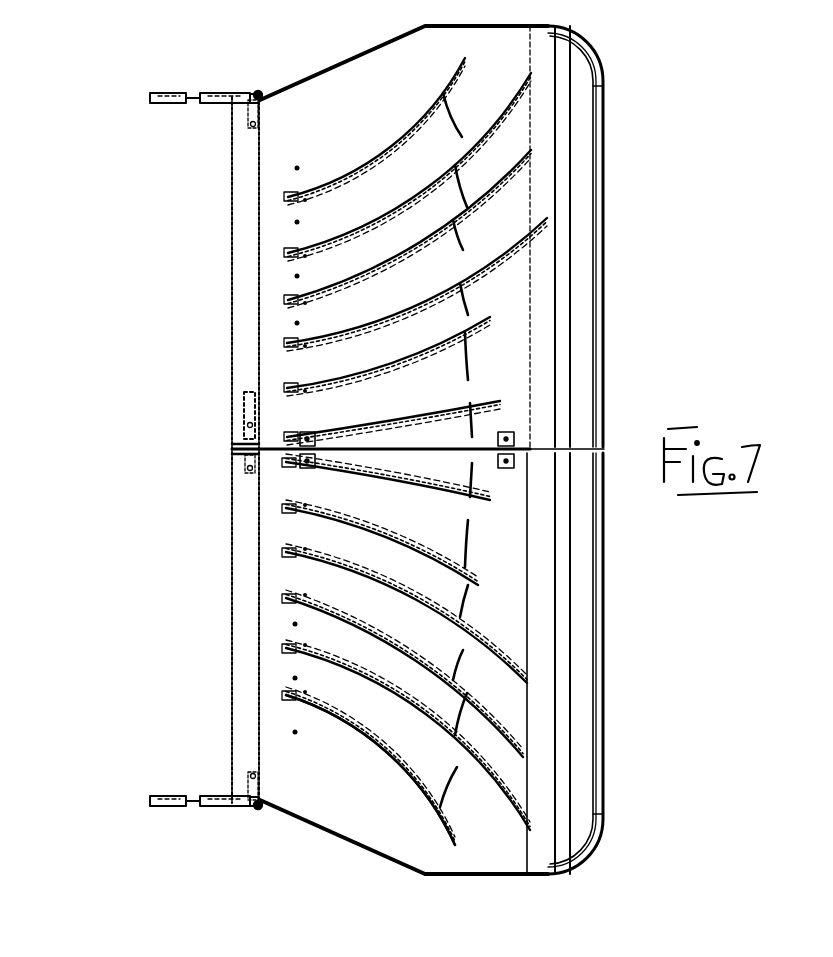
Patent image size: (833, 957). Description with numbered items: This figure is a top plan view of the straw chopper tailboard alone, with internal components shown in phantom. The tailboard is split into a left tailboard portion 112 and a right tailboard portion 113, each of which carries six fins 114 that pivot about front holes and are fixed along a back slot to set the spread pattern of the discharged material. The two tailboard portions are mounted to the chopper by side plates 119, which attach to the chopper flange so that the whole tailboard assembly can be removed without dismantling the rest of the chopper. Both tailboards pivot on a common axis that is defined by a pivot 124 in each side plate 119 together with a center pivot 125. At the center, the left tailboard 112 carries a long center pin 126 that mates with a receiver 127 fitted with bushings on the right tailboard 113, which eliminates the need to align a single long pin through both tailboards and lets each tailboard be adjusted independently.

The left tailboard portion 112 is at (626, 665).
The right tailboard portion 113 is at (640, 271).
The fins 114 is at (440, 826).
The side plates 119 is at (182, 86).
The pivot 124 is at (250, 90).
The center pivot 125 is at (226, 456).
The long center pin 126 is at (247, 464).
The receiver 127 is at (246, 420).